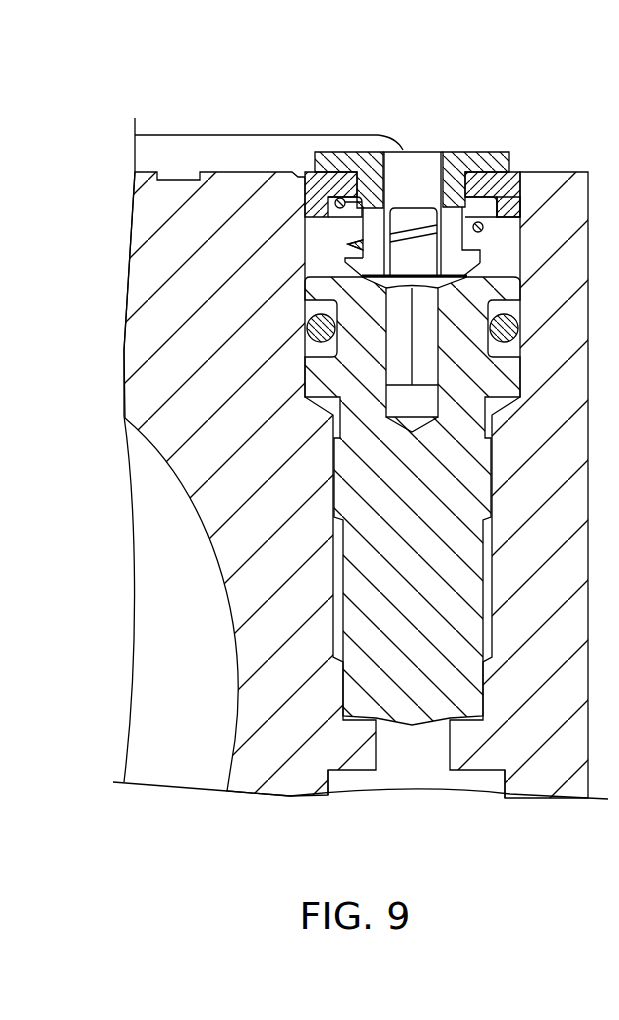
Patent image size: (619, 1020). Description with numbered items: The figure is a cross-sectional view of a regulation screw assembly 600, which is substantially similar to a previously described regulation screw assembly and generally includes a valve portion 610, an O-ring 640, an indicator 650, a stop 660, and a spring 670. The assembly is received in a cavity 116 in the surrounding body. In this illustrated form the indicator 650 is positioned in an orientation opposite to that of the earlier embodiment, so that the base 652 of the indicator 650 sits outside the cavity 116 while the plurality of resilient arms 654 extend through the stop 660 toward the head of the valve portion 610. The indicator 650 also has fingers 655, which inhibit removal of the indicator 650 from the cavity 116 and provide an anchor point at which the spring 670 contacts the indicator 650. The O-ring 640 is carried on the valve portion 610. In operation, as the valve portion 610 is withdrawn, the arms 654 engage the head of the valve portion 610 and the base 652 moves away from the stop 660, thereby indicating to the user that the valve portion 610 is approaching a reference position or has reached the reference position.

The regulation screw assembly 600 is at (346, 64).
The cavity 116 is at (532, 151).
The base 652 is at (348, 152).
The indicator 650 is at (457, 127).
The stop 660 is at (515, 207).
The spring 670 is at (486, 225).
The resilient arms 654 is at (371, 230).
The fingers 655 is at (347, 262).
The valve portion 610 is at (351, 472).
The O-ring 640 is at (311, 324).